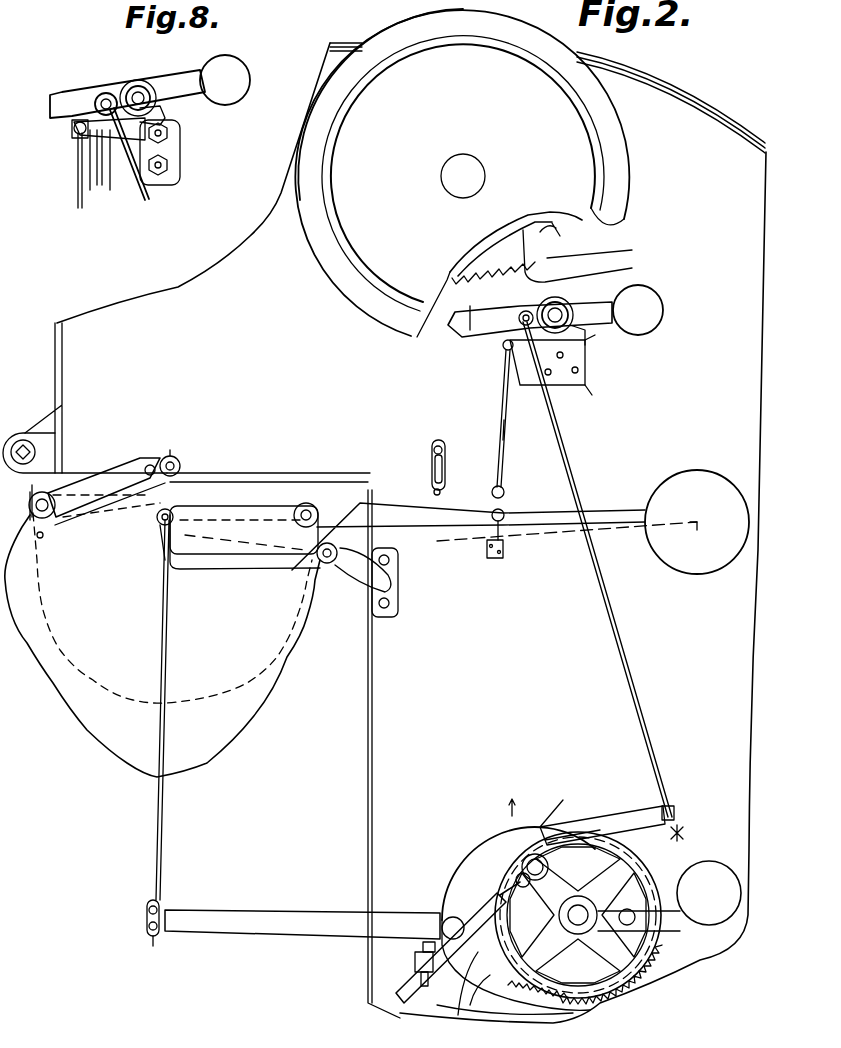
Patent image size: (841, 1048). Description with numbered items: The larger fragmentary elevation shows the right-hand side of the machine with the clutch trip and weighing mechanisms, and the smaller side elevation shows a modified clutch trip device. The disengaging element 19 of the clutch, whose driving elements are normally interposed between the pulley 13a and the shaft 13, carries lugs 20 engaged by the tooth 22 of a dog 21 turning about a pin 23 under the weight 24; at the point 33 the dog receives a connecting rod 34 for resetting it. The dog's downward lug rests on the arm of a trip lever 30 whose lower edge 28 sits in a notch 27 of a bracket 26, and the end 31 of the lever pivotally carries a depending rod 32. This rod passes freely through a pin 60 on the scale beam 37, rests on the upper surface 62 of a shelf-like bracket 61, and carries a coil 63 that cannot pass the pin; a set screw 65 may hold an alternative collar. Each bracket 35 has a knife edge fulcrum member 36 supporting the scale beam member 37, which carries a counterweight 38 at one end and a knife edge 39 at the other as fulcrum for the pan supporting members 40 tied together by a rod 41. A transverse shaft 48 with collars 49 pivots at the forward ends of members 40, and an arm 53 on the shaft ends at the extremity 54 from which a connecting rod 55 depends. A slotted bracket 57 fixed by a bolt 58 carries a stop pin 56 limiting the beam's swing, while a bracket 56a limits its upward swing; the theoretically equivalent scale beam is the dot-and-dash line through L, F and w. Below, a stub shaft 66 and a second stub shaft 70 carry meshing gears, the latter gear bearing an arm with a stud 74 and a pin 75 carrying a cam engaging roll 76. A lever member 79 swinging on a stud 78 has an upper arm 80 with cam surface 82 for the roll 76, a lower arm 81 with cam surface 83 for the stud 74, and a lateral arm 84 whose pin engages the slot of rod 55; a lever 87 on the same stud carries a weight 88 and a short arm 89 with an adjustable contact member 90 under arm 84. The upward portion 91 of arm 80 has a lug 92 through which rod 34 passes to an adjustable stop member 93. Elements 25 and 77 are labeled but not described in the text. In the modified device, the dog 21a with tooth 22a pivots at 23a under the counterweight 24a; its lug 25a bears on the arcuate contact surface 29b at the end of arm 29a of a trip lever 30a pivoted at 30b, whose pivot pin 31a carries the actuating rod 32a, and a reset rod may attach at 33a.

In FIG. 2, the shaft 13 is at (468, 160).
In FIG. 2, the pulley 13a is at (437, 23).
In FIG. 2, the clutch disengaging element 19 is at (530, 240).
In FIG. 2, the lugs or teeth 20 is at (610, 262).
In FIG. 2, the dog 21 is at (485, 330).
In FIG. 2, the tooth 22 is at (452, 330).
In FIG. 2, the pin 23 is at (565, 306).
In FIG. 2, the weight 24 is at (660, 302).
In FIG. 2, the bracket arm 25 is at (580, 330).
In FIG. 2, the bracket 26 is at (575, 365).
In FIG. 2, the notch 27 is at (590, 340).
In FIG. 2, the lower edge 28 is at (588, 380).
In FIG. 2, the trip lever 30 is at (520, 380).
In FIG. 2, the pivot point 31 is at (506, 352).
In FIG. 2, the depending rod 32 is at (503, 450).
In FIG. 2, the pivot point 33 is at (528, 312).
In FIG. 2, the connecting rod 34 is at (562, 450).
In FIG. 2, the bracket 35 is at (390, 585).
In FIG. 2, the knife edge fulcrum member 36 is at (318, 560).
In FIG. 2, the scale beam member 37 is at (437, 540).
In FIG. 2, the counterweight 38 is at (700, 490).
In FIG. 2, the knife edge 39 is at (172, 512).
In FIG. 2, the pan supporting member 40 is at (255, 505).
In FIG. 2, the rod 41 is at (312, 503).
In FIG. 2, the transverse shaft 48 is at (22, 470).
In FIG. 2, the collar 49 is at (30, 505).
In FIG. 2, the arm 53 is at (95, 485).
In FIG. 2, the free extremity 54 is at (178, 458).
In FIG. 2, the connecting rod 55 is at (160, 598).
In FIG. 2, the stop pin 56 is at (434, 494).
In FIG. 2, the bracket 56a is at (160, 525).
In FIG. 2, the slotted bracket 57 is at (432, 465).
In FIG. 2, the bolt 58 is at (442, 446).
In FIG. 2, the pin 60 is at (494, 512).
In FIG. 2, the shelf-like bracket 61 is at (503, 552).
In FIG. 2, the upper surface 62 is at (500, 532).
In FIG. 2, the coil 63 is at (505, 492).
In FIG. 2, the set screw 65 is at (148, 930).
In FIG. 2, the stub shaft 66 is at (147, 910).
In FIG. 2, the second stub shaft 70 is at (615, 955).
In FIG. 2, the stud or pin 74 is at (632, 922).
In FIG. 2, the pin 75 is at (530, 857).
In FIG. 2, the cam engaging roll 76 is at (578, 900).
In FIG. 2, the lever 77 is at (402, 1003).
In FIG. 2, the stud 78 is at (445, 905).
In FIG. 2, the lever member 79 is at (475, 1000).
In FIG. 2, the upper arm 80 is at (545, 830).
In FIG. 2, the lower arm 81 is at (528, 1012).
In FIG. 2, the cam surface 82 is at (567, 860).
In FIG. 2, the cam surface 83 is at (565, 1005).
In FIG. 2, the laterally projecting arm 84 is at (330, 938).
In FIG. 2, the lever 87 is at (660, 905).
In FIG. 2, the weight 88 is at (702, 920).
In FIG. 2, the short arm 89 is at (415, 962).
In FIG. 2, the adjustable contact member 90 is at (423, 946).
In FIG. 2, the upwardly and rearwardly extending portion 91 is at (650, 812).
In FIG. 2, the lug 92 is at (675, 812).
In FIG. 2, the adjustable stop member 93 is at (683, 832).
In FIG. 2, the equivalent scale beam point w is at (696, 545).
In FIG. 2, the equivalent scale beam point F is at (330, 565).
In FIG. 2, the equivalent scale beam point L is at (172, 548).
In FIG. 8, the tooth 22a is at (58, 96).
In FIG. 8, the pivot 23a is at (142, 85).
In FIG. 8, the counterweight 24a is at (232, 68).
In FIG. 8, the connecting rod attachment point 33a is at (106, 94).
In FIG. 8, the dog 21a is at (72, 124).
In FIG. 8, the lug 25a is at (160, 115).
In FIG. 8, the arm 29a is at (128, 190).
In FIG. 8, the contact surface 29b is at (150, 150).
In FIG. 8, the trip lever 30a is at (100, 180).
In FIG. 8, the pivot 30b is at (112, 160).
In FIG. 8, the pivot pin 31a is at (76, 138).
In FIG. 8, the actuating rod 32a is at (76, 190).